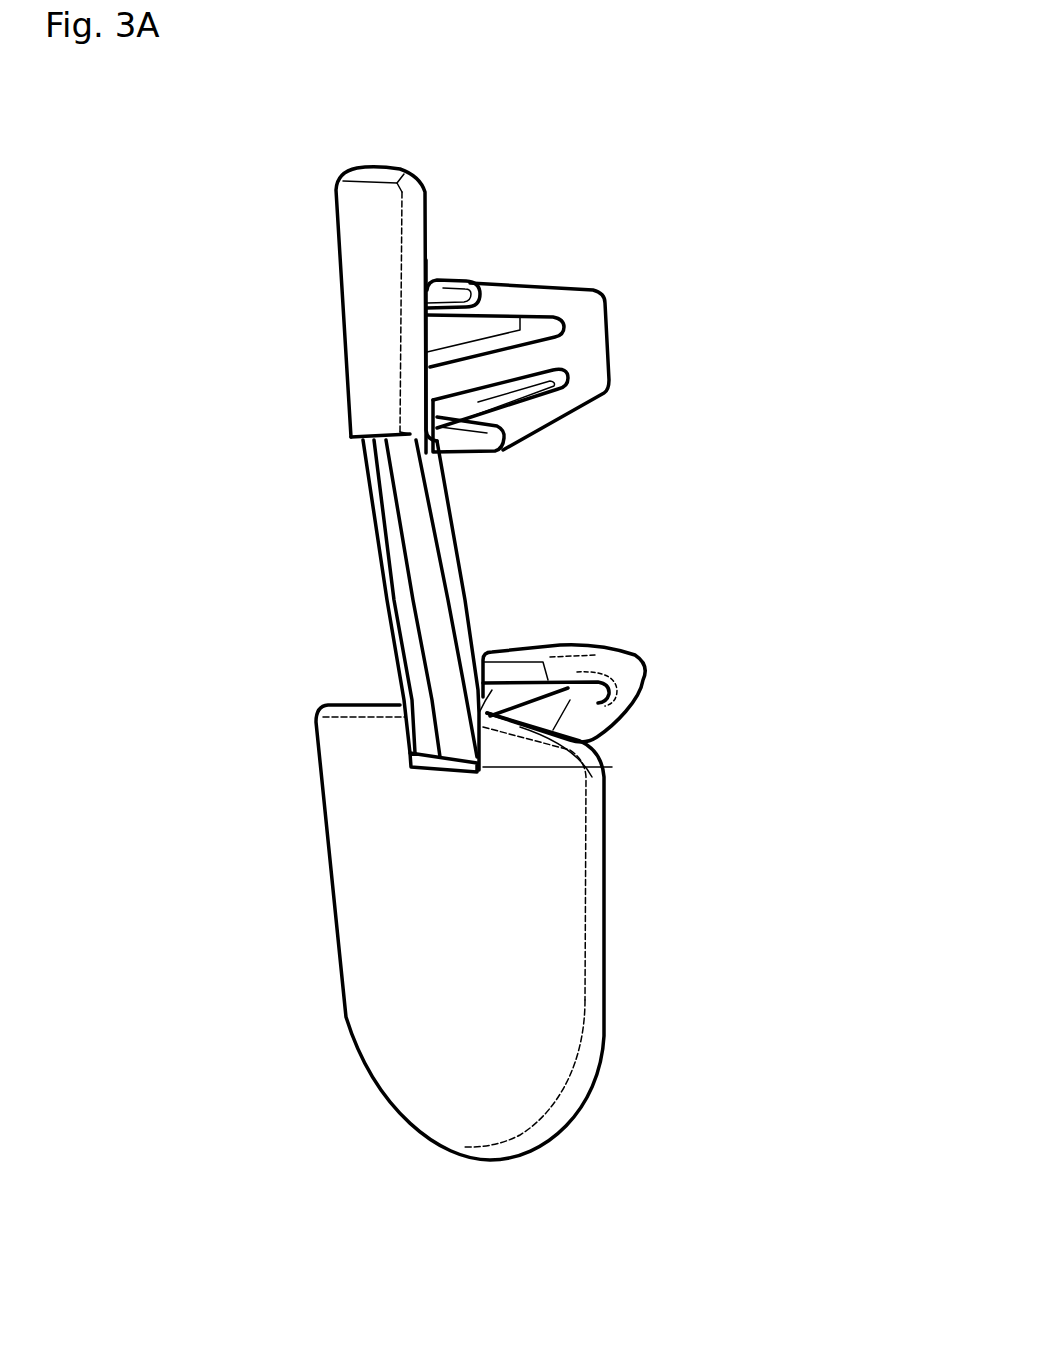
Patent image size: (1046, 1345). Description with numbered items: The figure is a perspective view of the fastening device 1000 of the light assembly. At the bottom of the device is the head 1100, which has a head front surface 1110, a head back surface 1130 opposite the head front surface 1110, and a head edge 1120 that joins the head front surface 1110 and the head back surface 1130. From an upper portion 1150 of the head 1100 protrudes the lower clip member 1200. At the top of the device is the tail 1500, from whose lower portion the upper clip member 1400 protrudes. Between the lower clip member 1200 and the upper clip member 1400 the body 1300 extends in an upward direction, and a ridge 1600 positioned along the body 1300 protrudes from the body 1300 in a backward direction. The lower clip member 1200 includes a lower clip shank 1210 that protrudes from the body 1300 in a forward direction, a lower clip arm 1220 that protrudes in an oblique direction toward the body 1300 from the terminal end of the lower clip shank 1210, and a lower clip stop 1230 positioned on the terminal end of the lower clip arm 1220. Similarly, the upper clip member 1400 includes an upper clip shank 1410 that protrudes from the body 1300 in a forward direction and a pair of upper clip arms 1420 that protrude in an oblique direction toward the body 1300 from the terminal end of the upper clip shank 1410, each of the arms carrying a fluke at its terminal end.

The fastening device 1000 is at (704, 226).
The head 1100 is at (654, 938).
The head front surface 1110 is at (605, 1053).
The head edge 1120 is at (520, 1143).
The head back surface 1130 is at (500, 940).
The upper portion of the head 1150 is at (610, 767).
The lower clip member 1200 is at (672, 650).
The lower clip shank 1210 is at (605, 716).
The lower clip arm 1220 is at (585, 645).
The lower clip stop 1230 is at (518, 651).
The body 1300 is at (480, 586).
The upper clip member 1400 is at (650, 311).
The upper clip shank 1410 is at (493, 360).
The pair of upper clip arms 1420 is at (517, 287).
The tail 1500 is at (455, 187).
The ridge 1600 is at (397, 547).